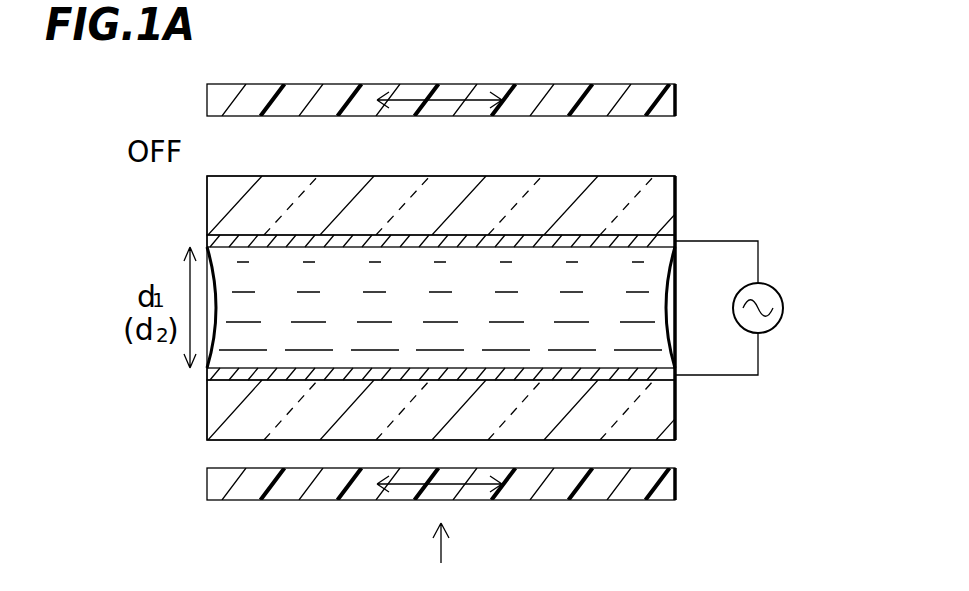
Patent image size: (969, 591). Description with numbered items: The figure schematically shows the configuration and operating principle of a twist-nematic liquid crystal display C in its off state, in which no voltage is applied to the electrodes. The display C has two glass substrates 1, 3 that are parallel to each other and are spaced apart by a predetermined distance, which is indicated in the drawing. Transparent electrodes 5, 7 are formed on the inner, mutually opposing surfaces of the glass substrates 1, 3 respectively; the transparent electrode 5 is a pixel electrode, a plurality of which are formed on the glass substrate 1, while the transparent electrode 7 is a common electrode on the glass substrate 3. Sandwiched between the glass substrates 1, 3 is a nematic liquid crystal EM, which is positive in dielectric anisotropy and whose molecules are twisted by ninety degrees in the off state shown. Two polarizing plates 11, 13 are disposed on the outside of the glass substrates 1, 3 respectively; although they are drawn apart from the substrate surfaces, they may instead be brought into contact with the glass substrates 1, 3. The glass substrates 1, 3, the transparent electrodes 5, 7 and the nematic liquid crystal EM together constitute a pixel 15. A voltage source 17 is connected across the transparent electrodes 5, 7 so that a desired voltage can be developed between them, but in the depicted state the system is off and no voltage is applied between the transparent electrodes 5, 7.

The glass substrate 1 is at (660, 407).
The glass substrate 3 is at (660, 205).
The transparent electrode 5 is at (212, 374).
The transparent electrode 7 is at (212, 242).
The polarizing plate 11 is at (670, 487).
The polarizing plate 13 is at (676, 98).
The pixel 15 is at (767, 268).
The voltage source 17 is at (784, 308).
The twist-nematic liquid crystal display C is at (797, 65).
The nematic liquid crystal EM is at (495, 312).